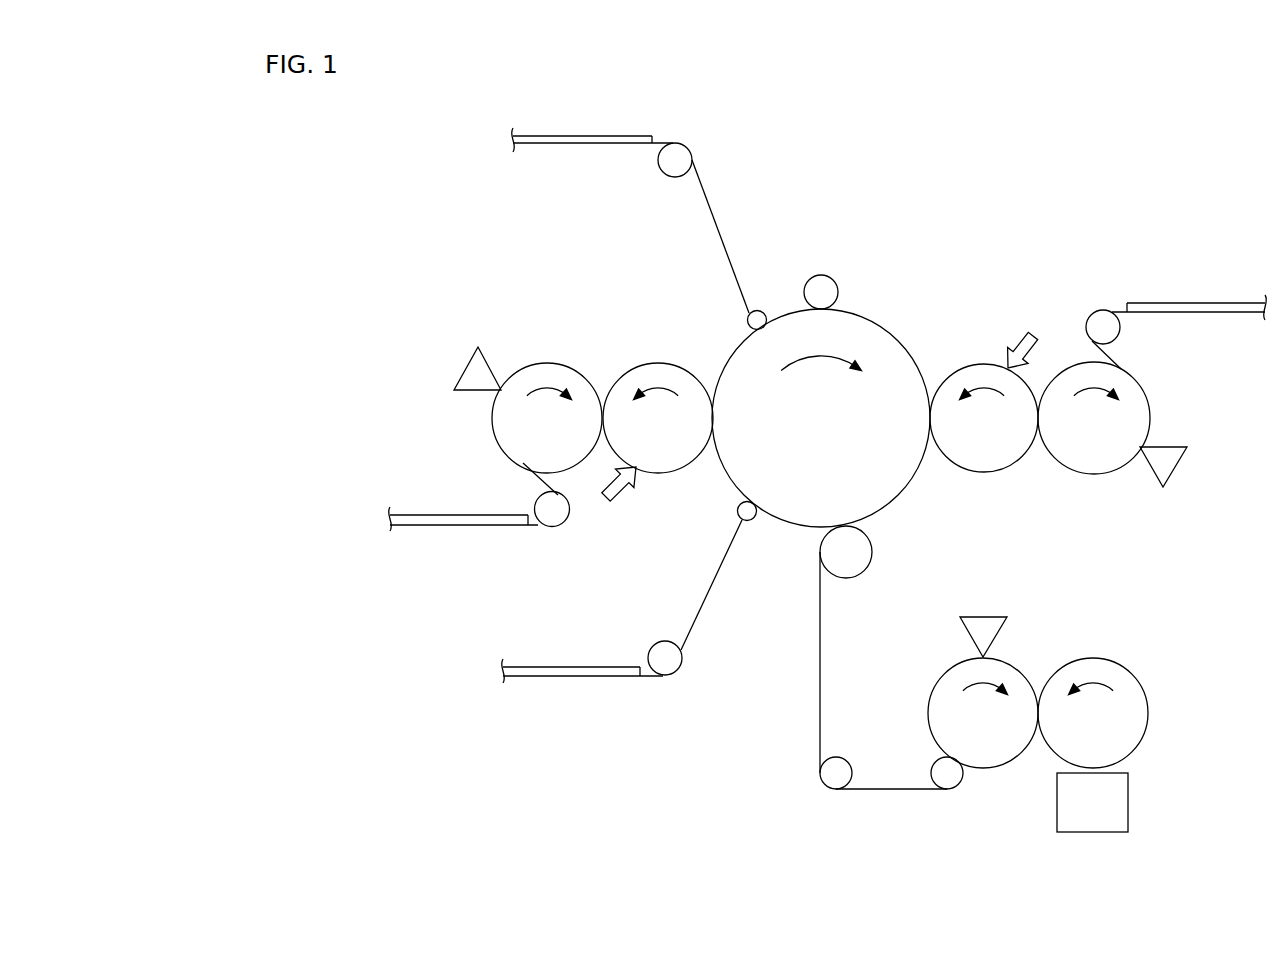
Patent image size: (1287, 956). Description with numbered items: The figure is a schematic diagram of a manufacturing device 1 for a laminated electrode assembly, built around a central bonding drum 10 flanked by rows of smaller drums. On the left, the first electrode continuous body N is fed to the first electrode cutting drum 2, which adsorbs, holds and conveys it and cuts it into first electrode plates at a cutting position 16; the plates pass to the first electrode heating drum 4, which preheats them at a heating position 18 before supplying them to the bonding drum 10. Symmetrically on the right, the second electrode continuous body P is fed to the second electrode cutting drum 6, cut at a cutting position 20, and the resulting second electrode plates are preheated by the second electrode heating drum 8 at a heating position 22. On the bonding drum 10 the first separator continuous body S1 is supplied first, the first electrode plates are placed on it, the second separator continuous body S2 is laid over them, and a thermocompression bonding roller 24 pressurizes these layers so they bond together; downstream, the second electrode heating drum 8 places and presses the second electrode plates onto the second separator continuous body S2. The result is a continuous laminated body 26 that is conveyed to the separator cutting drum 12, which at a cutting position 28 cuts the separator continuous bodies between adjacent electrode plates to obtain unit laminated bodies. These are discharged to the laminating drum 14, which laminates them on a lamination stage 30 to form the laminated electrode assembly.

The manufacturing device 1 is at (857, 897).
The first electrode cutting drum 2 is at (548, 363).
The first electrode heating drum 4 is at (657, 363).
The second electrode cutting drum 6 is at (1092, 474).
The second electrode heating drum 8 is at (982, 472).
The bonding drum 10 is at (877, 317).
The separator cutting drum 12 is at (947, 672).
The laminating drum 14 is at (1090, 658).
The cutting position 16 is at (503, 362).
The heating position 18 is at (648, 484).
The cutting position 20 is at (1140, 470).
The heating position 22 is at (992, 350).
The thermocompression bonding roller 24 is at (820, 275).
The continuous laminated body 26 is at (817, 663).
The cutting position 28 is at (1004, 650).
The lamination stage 30 is at (1128, 802).
The first electrode continuous body N is at (440, 516).
The second electrode continuous body P is at (1220, 302).
The first separator continuous body S1 is at (550, 665).
The second separator continuous body S2 is at (558, 135).